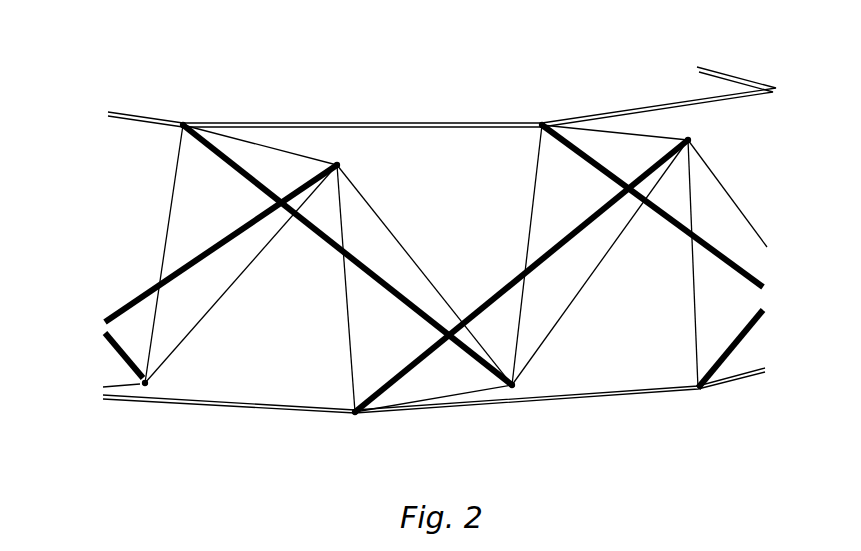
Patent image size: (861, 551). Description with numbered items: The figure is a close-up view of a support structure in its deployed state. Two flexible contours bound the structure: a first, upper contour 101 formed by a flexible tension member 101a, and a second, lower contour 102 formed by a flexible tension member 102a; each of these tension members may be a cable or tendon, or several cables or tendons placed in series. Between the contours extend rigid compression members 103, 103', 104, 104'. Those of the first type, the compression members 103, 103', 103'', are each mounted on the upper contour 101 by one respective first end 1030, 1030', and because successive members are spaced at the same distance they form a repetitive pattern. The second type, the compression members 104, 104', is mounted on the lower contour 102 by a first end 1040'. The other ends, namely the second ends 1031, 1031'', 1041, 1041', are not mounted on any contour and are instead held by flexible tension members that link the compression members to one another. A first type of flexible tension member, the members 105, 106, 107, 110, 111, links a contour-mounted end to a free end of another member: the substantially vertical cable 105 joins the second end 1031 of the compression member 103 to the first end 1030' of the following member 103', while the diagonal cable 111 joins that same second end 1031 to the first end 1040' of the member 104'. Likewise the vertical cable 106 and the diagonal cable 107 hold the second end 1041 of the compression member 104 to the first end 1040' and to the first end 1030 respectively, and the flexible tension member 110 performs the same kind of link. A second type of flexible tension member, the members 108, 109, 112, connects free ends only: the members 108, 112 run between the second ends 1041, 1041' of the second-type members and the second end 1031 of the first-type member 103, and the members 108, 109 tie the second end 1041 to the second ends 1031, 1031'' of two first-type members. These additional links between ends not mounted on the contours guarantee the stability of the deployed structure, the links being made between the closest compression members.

The first contour 101 is at (279, 116).
The flexible tension member 101a is at (380, 117).
The second contour 102 is at (455, 411).
The flexible tension member 102a is at (600, 410).
The rigid compression member 103 is at (347, 221).
The rigid compression member 103' is at (652, 175).
The rigid compression member 103'' is at (81, 358).
The rigid compression member 104 is at (202, 243).
The rigid compression member 104' is at (559, 276).
The vertical cable 105 is at (527, 222).
The vertical cable 106 is at (342, 297).
The diagonal cable 107 is at (287, 144).
The flexible tension member 108 is at (421, 265).
The flexible tension member 109 is at (221, 307).
The flexible tension member 110 is at (172, 190).
The diagonal cable 111 is at (479, 399).
The flexible tension member 112 is at (613, 257).
The first end 1030 is at (144, 92).
The first end 1030' is at (484, 92).
The second end 1031 is at (575, 373).
The second end 1031'' is at (94, 428).
The first end 1040' is at (292, 389).
The second end 1041 is at (395, 163).
The second end 1041' is at (750, 130).